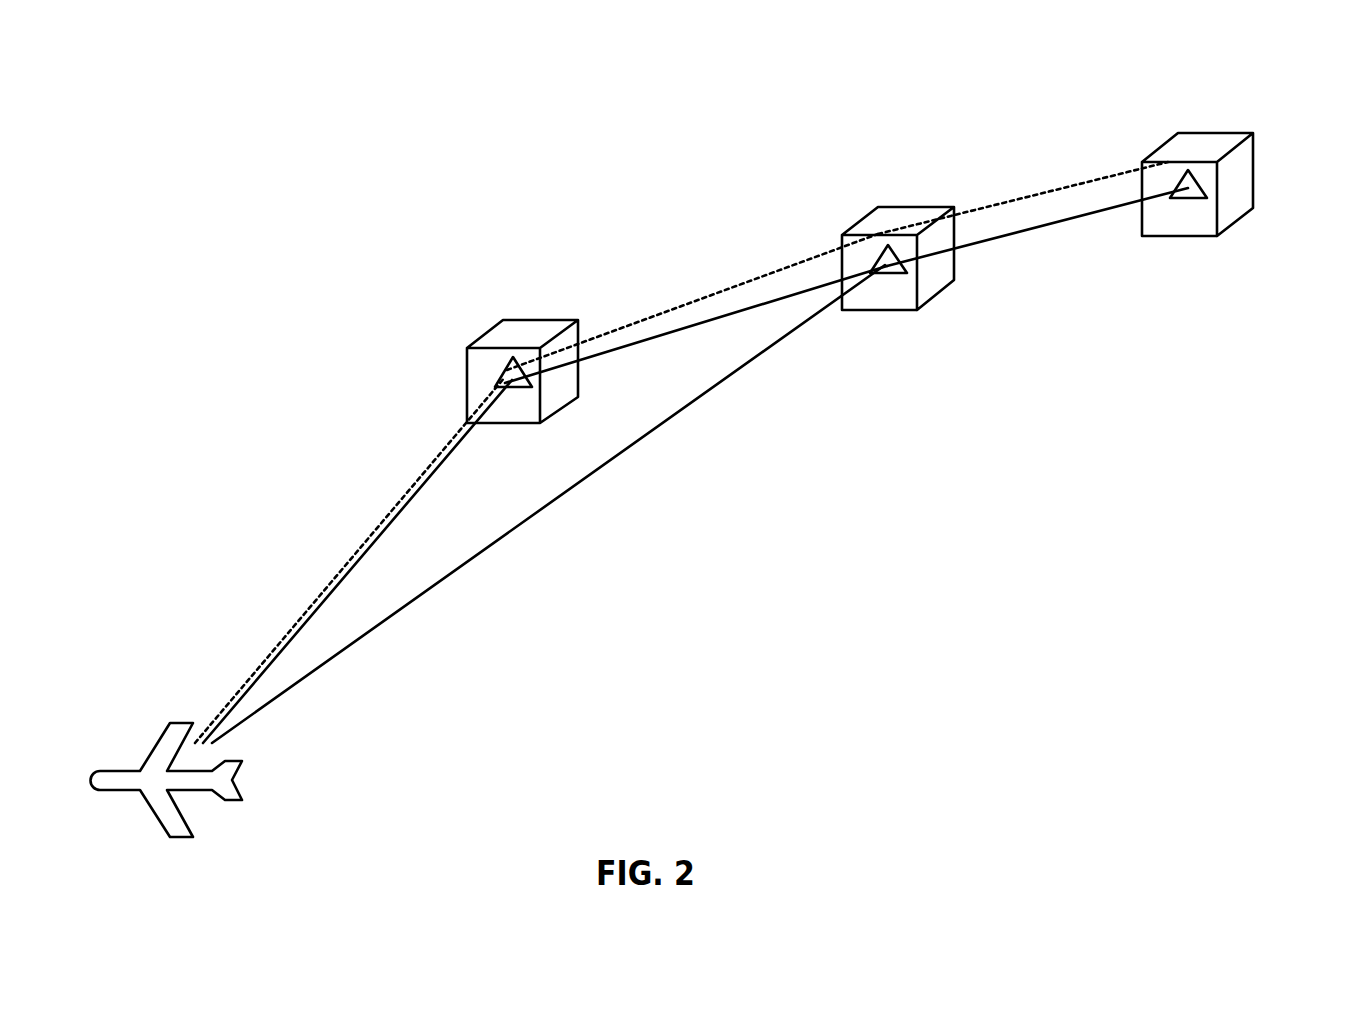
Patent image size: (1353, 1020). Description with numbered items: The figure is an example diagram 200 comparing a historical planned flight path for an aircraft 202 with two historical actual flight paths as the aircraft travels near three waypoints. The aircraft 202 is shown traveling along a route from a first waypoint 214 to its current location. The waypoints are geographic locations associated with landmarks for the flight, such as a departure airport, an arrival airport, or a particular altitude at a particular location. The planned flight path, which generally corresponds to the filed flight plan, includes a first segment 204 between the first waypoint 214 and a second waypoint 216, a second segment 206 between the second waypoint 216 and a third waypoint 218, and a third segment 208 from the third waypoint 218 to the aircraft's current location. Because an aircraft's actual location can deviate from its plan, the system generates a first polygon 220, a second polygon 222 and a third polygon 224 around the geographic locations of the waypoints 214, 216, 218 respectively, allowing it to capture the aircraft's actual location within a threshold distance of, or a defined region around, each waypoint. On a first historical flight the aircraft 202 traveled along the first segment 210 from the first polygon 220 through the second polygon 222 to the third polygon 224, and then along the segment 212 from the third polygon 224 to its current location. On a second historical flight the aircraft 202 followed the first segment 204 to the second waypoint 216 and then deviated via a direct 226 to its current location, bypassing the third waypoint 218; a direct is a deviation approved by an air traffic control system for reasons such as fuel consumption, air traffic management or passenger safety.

The example diagram 200 is at (185, 105).
The aircraft 202 is at (168, 722).
The first segment 204 is at (1058, 223).
The second segment 206 is at (702, 322).
The third segment 208 is at (250, 687).
The first segment 210 is at (1058, 188).
The segment 212 is at (288, 635).
The first waypoint 214 is at (1197, 200).
The second waypoint 216 is at (897, 272).
The third waypoint 218 is at (500, 370).
The first polygon 220 is at (1253, 208).
The second polygon 222 is at (955, 268).
The third polygon 224 is at (503, 320).
The direct 226 is at (683, 415).